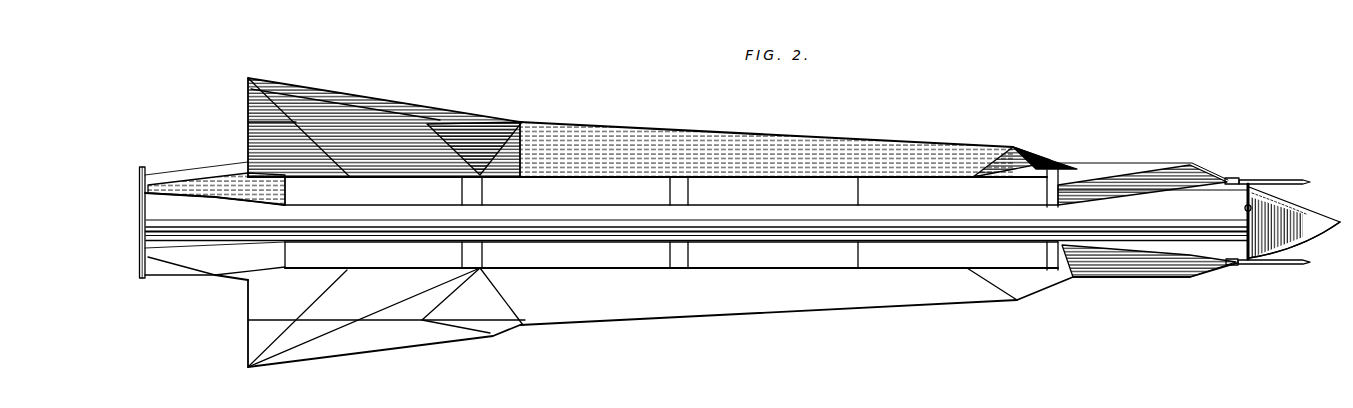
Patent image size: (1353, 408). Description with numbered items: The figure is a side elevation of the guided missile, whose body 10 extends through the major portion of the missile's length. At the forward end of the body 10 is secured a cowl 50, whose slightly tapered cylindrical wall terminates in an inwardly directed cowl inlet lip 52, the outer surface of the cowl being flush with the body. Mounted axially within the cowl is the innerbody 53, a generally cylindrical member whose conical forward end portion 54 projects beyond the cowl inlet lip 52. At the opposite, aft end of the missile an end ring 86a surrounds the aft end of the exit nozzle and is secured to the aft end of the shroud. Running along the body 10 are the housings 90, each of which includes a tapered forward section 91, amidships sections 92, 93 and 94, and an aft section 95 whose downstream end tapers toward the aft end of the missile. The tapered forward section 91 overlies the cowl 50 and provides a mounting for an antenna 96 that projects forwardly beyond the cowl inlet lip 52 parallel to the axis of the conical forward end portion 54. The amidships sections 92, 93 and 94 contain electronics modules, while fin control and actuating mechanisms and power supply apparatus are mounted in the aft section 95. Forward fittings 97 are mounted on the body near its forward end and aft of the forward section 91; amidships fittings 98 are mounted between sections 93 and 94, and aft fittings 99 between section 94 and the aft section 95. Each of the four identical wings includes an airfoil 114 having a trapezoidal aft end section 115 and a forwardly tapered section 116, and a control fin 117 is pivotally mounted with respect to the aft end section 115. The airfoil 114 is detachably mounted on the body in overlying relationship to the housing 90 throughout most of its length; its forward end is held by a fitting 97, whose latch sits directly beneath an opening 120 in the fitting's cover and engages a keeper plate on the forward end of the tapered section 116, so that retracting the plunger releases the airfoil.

The body 10 is at (702, 220).
The end ring 86a is at (145, 279).
The aft section 95 is at (224, 185).
The trapezoidal aft end section 115 is at (265, 133).
The control fin 117 is at (373, 101).
The aft fittings 99 is at (475, 190).
The amidships section 94 is at (593, 189).
The amidships fittings 98 is at (677, 188).
The amidships section 93 is at (770, 189).
The amidships section 92 is at (920, 189).
The airfoil 114 is at (856, 133).
The forwardly tapered section 116 is at (974, 145).
The opening 120 is at (1049, 157).
The forward fittings 97 is at (1064, 203).
The housings 90 is at (1134, 158).
The tapered forward section 91 is at (1172, 168).
The cowl 50 is at (1231, 176).
The antennas 96 is at (1263, 181).
The cowl inlet lip 52 is at (1244, 208).
The conical forward end portion 54 is at (1281, 218).
The innerbody 53 is at (1303, 237).